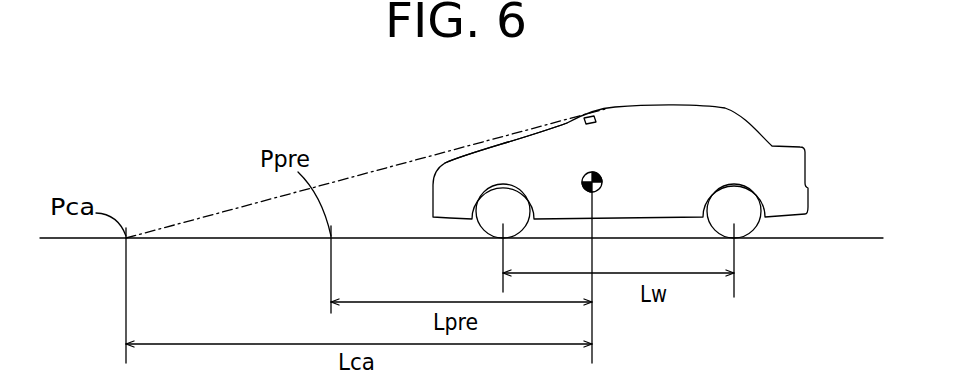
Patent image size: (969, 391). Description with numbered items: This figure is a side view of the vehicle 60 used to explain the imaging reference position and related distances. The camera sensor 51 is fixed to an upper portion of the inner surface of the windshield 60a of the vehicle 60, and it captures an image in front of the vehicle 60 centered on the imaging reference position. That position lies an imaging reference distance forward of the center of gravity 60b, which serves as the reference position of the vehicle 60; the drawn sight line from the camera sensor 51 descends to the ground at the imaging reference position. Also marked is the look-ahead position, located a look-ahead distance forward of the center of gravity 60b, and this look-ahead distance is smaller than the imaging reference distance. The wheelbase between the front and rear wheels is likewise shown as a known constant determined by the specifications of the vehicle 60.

The camera sensor 51 is at (589, 116).
The vehicle 60 is at (728, 112).
The windshield 60a is at (550, 132).
The center of gravity 60b is at (596, 171).